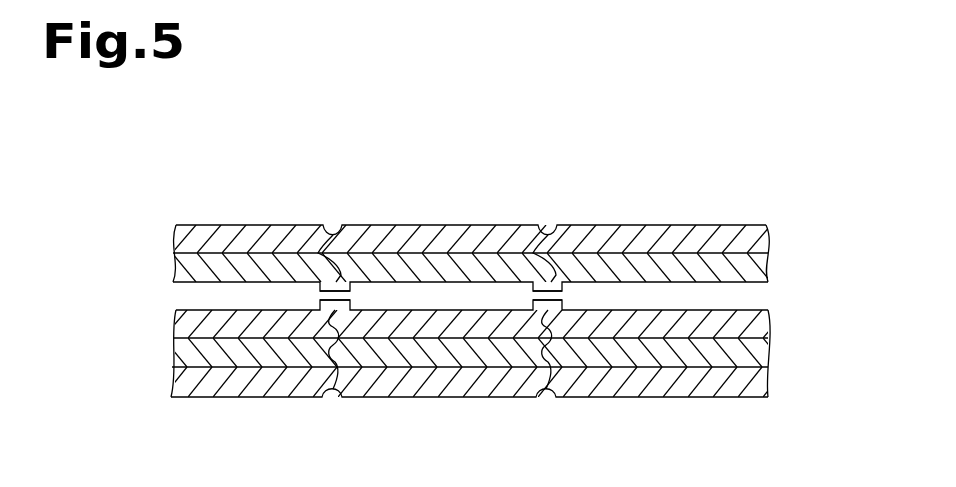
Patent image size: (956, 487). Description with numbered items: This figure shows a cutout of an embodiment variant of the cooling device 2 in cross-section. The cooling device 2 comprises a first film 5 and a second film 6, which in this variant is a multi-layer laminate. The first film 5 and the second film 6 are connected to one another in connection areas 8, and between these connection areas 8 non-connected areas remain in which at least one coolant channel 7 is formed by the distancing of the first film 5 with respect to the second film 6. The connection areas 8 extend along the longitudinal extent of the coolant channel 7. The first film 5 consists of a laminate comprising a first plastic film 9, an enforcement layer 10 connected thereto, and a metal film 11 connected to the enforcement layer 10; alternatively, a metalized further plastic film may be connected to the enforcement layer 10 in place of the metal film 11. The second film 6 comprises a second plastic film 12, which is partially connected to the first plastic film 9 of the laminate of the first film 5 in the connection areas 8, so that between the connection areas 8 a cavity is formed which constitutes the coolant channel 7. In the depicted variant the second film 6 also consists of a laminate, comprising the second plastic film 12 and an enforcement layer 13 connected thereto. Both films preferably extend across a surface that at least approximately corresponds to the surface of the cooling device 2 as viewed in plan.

The cooling device 2 is at (454, 272).
The first film 5 is at (459, 383).
The second film 6 is at (398, 197).
The coolant channel 7 is at (675, 295).
The connection areas 8 is at (334, 302).
The first plastic film 9 is at (157, 325).
The enforcement layer 10 is at (790, 353).
The metal film 11 is at (157, 383).
The second plastic film 12 is at (157, 268).
The enforcement layer 13 is at (157, 235).